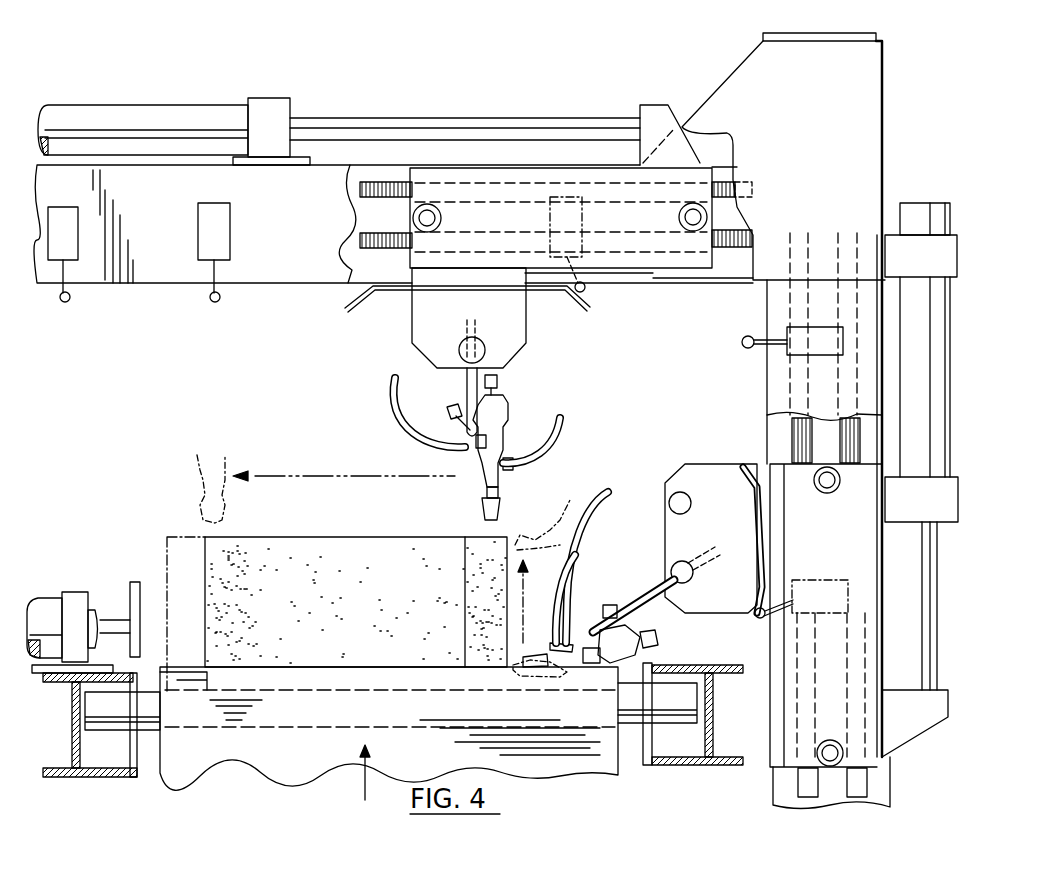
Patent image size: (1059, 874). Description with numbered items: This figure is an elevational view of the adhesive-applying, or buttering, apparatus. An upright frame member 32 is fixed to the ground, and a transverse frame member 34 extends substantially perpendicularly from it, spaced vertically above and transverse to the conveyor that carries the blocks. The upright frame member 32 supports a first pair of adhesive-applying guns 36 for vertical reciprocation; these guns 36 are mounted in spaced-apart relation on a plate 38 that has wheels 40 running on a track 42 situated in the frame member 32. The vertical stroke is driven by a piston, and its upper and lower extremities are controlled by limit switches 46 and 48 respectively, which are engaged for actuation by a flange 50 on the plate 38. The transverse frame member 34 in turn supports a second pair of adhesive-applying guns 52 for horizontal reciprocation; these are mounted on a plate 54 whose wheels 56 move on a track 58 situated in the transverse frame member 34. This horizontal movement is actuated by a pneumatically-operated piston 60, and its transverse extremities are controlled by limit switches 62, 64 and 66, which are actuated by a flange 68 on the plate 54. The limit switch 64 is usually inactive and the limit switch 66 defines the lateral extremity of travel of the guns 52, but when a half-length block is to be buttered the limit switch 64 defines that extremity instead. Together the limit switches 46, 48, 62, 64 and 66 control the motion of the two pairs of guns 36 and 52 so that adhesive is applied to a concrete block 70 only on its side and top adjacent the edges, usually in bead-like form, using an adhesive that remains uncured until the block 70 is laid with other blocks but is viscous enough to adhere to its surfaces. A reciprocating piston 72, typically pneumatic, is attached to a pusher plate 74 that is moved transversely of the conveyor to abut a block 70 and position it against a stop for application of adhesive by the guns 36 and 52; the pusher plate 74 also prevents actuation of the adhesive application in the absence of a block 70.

The upright frame member 32 is at (883, 788).
The transverse frame member 34 is at (132, 180).
The first pair of adhesive-applying guns 36 is at (605, 590).
The plate 38 is at (717, 477).
The wheels 40 is at (817, 752).
The track 42 is at (917, 210).
The limit switch 46 is at (818, 327).
The limit switch 48 is at (803, 593).
The flange 50 is at (750, 610).
The second pair of adhesive-applying guns 52 is at (503, 410).
The plate 54 is at (420, 307).
The wheels 56 is at (427, 205).
The track 58 is at (513, 243).
The pneumatically-operated piston 60 is at (200, 118).
The limit switch 62 is at (578, 254).
The limit switch 64 is at (242, 215).
The limit switch 66 is at (70, 220).
The flange 68 is at (343, 300).
The concrete block 70 is at (330, 543).
The reciprocating piston 72 is at (50, 603).
The pusher plate 74 is at (133, 583).